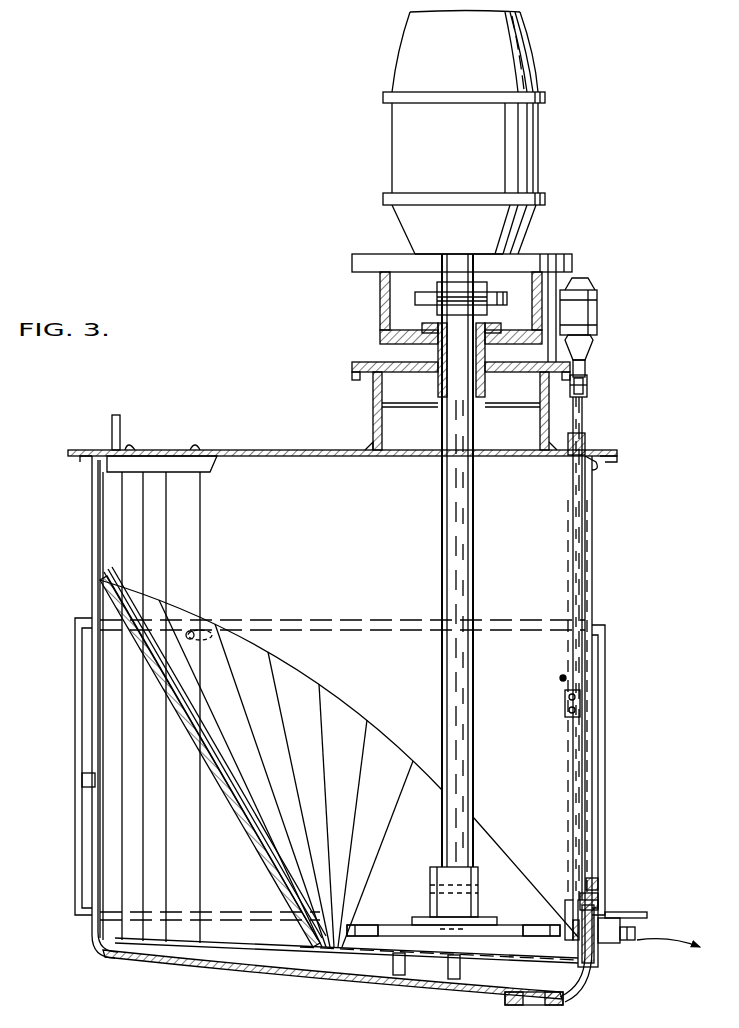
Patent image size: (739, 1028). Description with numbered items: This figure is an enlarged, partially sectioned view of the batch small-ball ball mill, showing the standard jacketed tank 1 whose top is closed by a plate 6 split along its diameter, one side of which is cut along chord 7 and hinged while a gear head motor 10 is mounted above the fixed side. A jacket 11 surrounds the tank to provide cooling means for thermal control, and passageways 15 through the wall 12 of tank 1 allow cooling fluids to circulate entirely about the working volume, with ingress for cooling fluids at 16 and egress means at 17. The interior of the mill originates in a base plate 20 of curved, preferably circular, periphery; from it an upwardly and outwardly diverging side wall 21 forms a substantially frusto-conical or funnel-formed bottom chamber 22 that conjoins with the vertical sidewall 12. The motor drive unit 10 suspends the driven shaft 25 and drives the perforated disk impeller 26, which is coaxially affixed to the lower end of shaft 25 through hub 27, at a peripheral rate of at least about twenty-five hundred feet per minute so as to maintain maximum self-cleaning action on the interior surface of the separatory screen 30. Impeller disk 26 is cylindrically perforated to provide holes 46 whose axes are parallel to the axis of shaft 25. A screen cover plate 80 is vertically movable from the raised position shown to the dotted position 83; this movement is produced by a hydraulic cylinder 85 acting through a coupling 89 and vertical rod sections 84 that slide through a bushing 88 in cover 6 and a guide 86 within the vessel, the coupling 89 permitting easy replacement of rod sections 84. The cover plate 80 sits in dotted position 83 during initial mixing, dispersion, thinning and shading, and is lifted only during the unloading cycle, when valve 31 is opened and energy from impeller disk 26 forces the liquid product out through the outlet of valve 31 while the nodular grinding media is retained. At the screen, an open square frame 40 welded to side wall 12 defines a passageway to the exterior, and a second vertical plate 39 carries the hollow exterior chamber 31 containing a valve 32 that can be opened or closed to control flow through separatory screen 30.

The jacketed tank 1 is at (367, 729).
The plate 6 is at (262, 450).
The chord 7 is at (145, 450).
The gear head motor 10 is at (545, 62).
The jacket 11 is at (76, 688).
The wall 12 is at (97, 540).
The passageways 15 is at (96, 780).
The ingress 16 is at (540, 1002).
The egress means 17 is at (210, 633).
The base plate 20 is at (488, 960).
The side wall 21 is at (278, 882).
The bottom chamber 22 is at (385, 735).
The driven shaft 25 is at (475, 565).
The perforated disk impeller 26 is at (393, 925).
The hub 27 is at (436, 867).
The separatory screen 30 is at (572, 937).
The valve 31 is at (616, 946).
The valve 32 is at (622, 912).
The second vertical plate 39 is at (600, 958).
The open square frame 40 is at (598, 900).
The holes 46 is at (365, 925).
The screen cover plate 80 is at (576, 880).
The dotted position 83 is at (568, 912).
The vertical rod sections 84 is at (571, 558).
The hydraulic cylinder 85 is at (597, 305).
The guide 86 is at (561, 677).
The bushing 88 is at (586, 440).
The coupling 89 is at (588, 387).